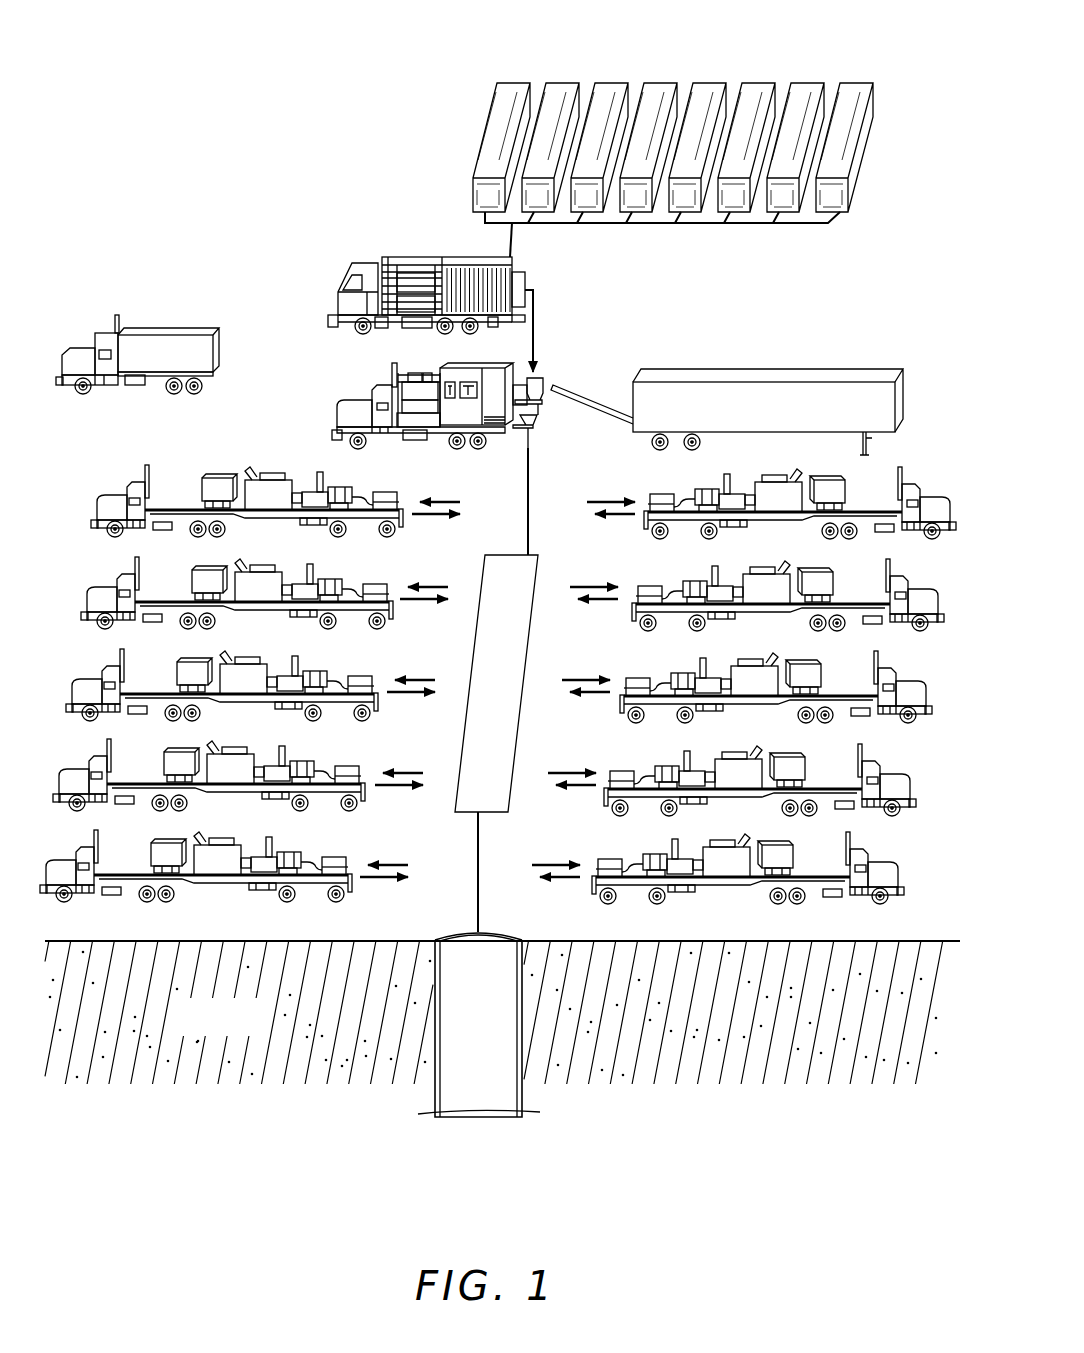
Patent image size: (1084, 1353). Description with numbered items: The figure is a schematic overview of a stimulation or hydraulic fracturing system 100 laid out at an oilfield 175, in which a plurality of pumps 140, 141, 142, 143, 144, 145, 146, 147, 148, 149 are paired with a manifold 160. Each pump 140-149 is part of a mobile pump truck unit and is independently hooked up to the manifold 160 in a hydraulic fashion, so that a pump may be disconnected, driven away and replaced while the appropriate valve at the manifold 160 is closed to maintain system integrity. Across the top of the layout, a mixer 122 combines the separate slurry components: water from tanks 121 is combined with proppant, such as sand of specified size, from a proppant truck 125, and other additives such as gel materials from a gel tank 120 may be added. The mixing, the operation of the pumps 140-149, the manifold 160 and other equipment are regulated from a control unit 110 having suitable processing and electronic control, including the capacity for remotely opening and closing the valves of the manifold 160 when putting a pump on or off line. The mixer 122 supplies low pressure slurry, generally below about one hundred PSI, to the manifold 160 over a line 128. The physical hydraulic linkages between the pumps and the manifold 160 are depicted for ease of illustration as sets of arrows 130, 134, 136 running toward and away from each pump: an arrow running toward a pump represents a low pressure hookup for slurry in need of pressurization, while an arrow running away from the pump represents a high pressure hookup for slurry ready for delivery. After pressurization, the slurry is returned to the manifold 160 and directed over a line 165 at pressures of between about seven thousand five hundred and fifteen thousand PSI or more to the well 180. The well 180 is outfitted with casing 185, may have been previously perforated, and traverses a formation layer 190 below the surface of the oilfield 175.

The stimulation system 100 is at (203, 52).
The control unit 110 is at (156, 325).
The gel tank 120 is at (401, 250).
The tanks 121 is at (704, 42).
The mixer 122 is at (382, 388).
The proppant truck 125 is at (768, 368).
The line 128 is at (528, 485).
The hydraulic linkage arrows 130 is at (436, 490).
The hydraulic linkage arrows 134 is at (383, 854).
The hydraulic linkage arrows 136 is at (601, 575).
The pump 140 is at (277, 466).
The pump 141 is at (253, 560).
The pump 142 is at (246, 650).
The pump 143 is at (232, 745).
The pump 144 is at (220, 840).
The pump 145 is at (710, 490).
The pump 146 is at (733, 582).
The pump 147 is at (727, 672).
The pump 148 is at (713, 762).
The pump 149 is at (700, 855).
The manifold 160 is at (502, 697).
The line 165 is at (478, 868).
The oilfield 175 is at (245, 940).
The well 180 is at (463, 1053).
The casing 185 is at (520, 1055).
The formation layer 190 is at (246, 1031).